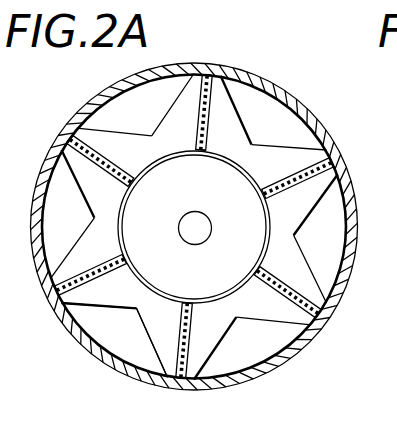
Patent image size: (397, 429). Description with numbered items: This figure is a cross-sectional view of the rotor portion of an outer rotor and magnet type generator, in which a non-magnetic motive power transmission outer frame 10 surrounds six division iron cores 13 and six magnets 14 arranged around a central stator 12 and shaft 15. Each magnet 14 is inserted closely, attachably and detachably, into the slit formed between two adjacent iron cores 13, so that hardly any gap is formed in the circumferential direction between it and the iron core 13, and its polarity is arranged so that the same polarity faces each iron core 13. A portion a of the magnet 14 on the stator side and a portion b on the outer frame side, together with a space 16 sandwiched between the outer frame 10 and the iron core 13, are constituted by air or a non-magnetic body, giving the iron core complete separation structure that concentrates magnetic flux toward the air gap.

The motive power transmission outer frame 10 is at (355, 194).
The stator 12 is at (148, 255).
The division iron core 13 is at (312, 292).
The magnet 14 is at (188, 368).
The shaft 15 is at (189, 236).
The non-magnetic space 16 is at (140, 355).
The portion of a side of the stator of the magnet a is at (199, 150).
The portion of a side of the outer frame b is at (205, 64).